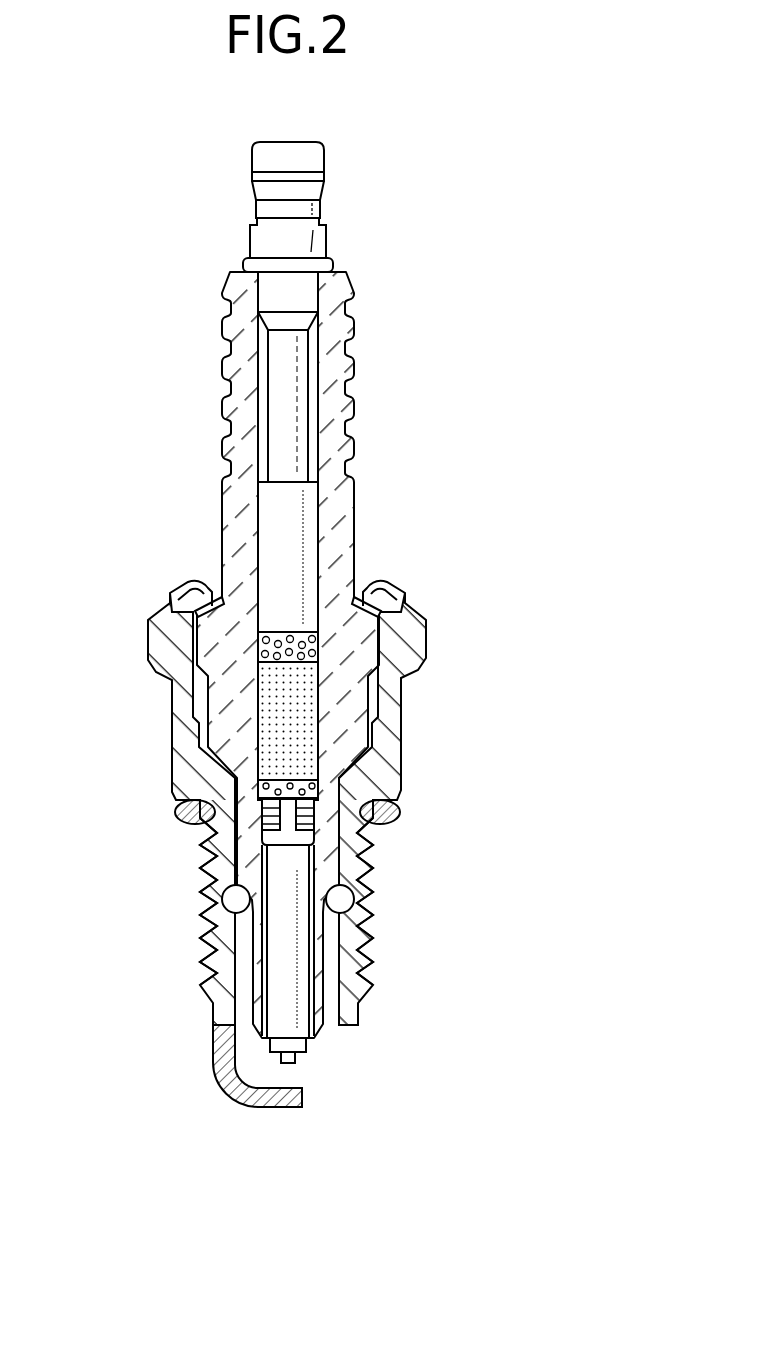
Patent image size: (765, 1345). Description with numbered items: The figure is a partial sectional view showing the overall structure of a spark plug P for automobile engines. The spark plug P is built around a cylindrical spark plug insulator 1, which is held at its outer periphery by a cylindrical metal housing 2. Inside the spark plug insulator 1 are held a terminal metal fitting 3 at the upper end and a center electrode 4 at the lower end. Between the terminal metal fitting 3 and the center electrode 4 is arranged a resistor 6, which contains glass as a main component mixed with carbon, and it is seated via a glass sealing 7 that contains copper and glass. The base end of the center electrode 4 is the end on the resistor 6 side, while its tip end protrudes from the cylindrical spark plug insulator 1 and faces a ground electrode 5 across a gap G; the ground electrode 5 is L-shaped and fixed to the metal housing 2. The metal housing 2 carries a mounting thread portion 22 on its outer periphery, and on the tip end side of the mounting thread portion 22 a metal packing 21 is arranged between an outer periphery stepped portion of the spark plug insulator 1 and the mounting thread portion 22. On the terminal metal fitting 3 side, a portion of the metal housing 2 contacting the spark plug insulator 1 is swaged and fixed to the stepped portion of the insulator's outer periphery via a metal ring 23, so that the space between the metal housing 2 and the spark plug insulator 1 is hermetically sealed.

The spark plug P is at (408, 165).
The spark plug insulator 1 is at (240, 343).
The metal housing 2 is at (413, 638).
The terminal metal fitting 3 is at (308, 242).
The center electrode 4 is at (288, 948).
The ground electrode 5 is at (288, 1107).
The resistor 6 is at (300, 722).
The glass sealing 7 is at (296, 632).
The metal packing 21 is at (242, 890).
The mounting thread portion 22 is at (208, 945).
The metal ring 23 is at (203, 590).
The gap G is at (285, 1077).